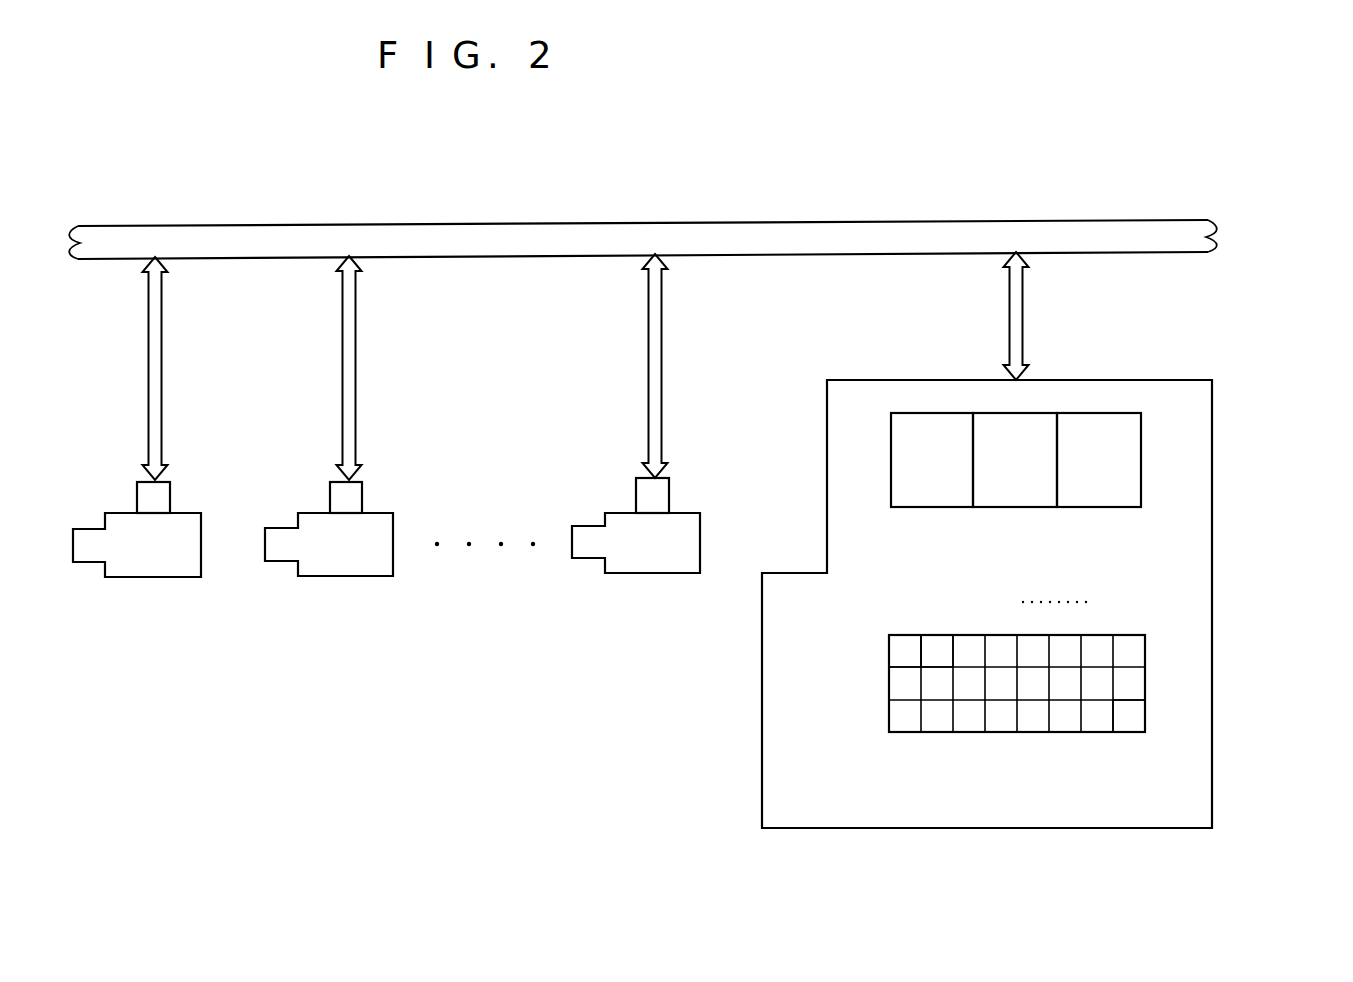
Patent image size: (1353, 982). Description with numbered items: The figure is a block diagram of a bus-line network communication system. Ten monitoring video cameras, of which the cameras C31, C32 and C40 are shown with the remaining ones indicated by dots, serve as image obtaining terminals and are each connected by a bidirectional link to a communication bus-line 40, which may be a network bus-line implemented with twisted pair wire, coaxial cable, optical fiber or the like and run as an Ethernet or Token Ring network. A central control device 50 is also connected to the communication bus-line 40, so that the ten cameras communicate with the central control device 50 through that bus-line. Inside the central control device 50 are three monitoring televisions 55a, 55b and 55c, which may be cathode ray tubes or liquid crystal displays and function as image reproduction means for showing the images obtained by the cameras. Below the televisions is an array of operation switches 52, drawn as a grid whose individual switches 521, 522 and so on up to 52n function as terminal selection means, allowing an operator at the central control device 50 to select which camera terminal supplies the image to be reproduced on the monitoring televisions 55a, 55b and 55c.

The communication bus-line 40 is at (1073, 220).
The central control device 50 is at (1117, 378).
The monitoring camera C31 is at (133, 578).
The monitoring camera C32 is at (327, 577).
The monitoring camera C40 is at (633, 574).
The monitoring television 55a is at (897, 452).
The monitoring television 55b is at (998, 426).
The monitoring television 55c is at (1127, 463).
The operation switches 52 is at (1067, 720).
The operation switch 521 is at (908, 650).
The operation switch 522 is at (933, 650).
The operation switch 52n is at (1130, 718).